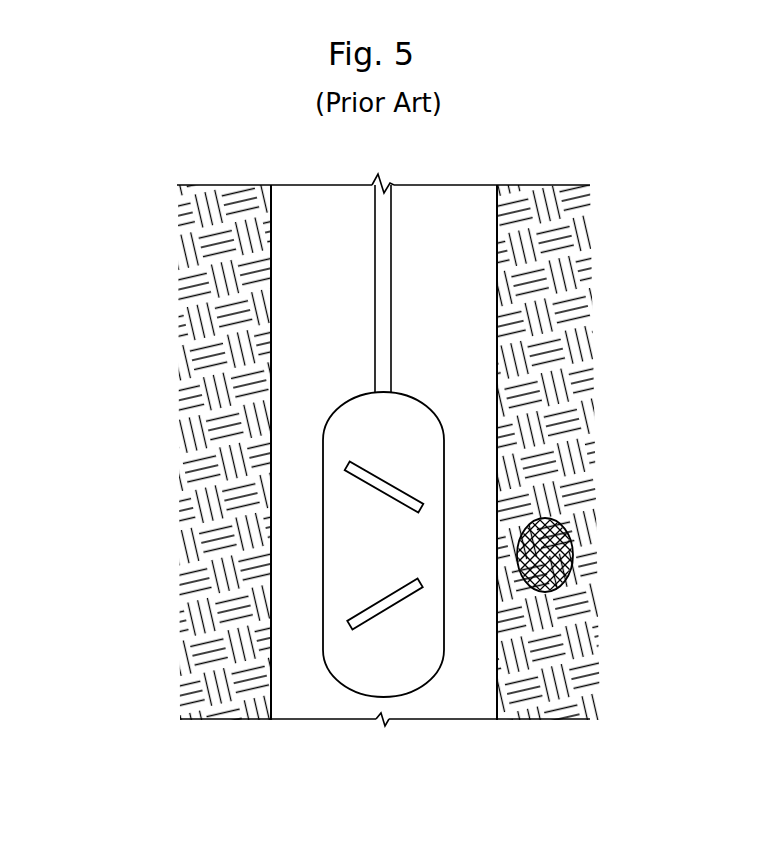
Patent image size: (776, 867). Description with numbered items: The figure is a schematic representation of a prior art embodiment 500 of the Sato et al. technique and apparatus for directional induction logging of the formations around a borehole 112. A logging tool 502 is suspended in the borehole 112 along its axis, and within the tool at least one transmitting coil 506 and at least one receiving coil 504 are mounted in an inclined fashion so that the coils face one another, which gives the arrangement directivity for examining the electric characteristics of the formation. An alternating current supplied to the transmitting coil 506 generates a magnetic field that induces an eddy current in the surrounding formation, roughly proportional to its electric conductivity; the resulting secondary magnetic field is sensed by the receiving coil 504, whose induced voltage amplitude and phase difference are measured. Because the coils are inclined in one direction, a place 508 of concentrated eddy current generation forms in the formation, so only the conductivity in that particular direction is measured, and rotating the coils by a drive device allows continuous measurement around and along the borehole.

The borehole 112 is at (290, 247).
The representative example embodiment 500 is at (633, 200).
The downhole tool 502 is at (444, 430).
The receiving coil 504 is at (350, 479).
The transmitting coil 506 is at (358, 612).
The place of concentration of eddy current generation 508 is at (575, 547).